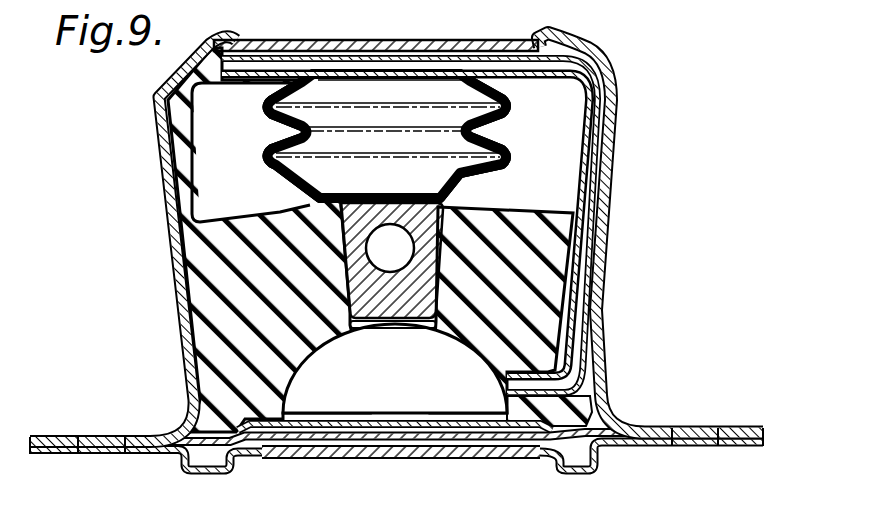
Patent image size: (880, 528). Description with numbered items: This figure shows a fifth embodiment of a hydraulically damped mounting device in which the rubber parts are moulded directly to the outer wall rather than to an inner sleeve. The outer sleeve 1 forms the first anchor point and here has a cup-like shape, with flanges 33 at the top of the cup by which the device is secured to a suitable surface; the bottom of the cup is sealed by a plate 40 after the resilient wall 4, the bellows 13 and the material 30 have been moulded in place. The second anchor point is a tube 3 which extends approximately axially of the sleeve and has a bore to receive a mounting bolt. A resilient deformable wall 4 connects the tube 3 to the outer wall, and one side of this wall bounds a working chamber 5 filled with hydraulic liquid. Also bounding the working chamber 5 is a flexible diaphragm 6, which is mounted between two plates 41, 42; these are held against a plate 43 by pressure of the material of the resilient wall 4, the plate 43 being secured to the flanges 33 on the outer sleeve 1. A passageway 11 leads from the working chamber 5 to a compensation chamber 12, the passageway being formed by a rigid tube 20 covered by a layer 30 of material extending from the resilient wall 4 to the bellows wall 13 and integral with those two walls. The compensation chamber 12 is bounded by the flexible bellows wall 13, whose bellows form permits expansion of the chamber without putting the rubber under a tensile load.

The outer sleeve 1 is at (185, 58).
The tube 3 is at (388, 300).
The resilient deformable wall 4 is at (197, 292).
The working chamber 5 is at (460, 398).
The flexible diaphragm 6 is at (403, 440).
The passageway 11 is at (587, 215).
The compensation chamber 12 is at (455, 143).
The bellows wall 13 is at (266, 152).
The rigid tube 20 is at (603, 340).
The layer of material 30 is at (617, 143).
The flanges 33 is at (67, 437).
The plate 40 is at (450, 42).
The mounting plate 41 is at (250, 445).
The mounting plate 42 is at (293, 460).
The plate 43 is at (588, 472).